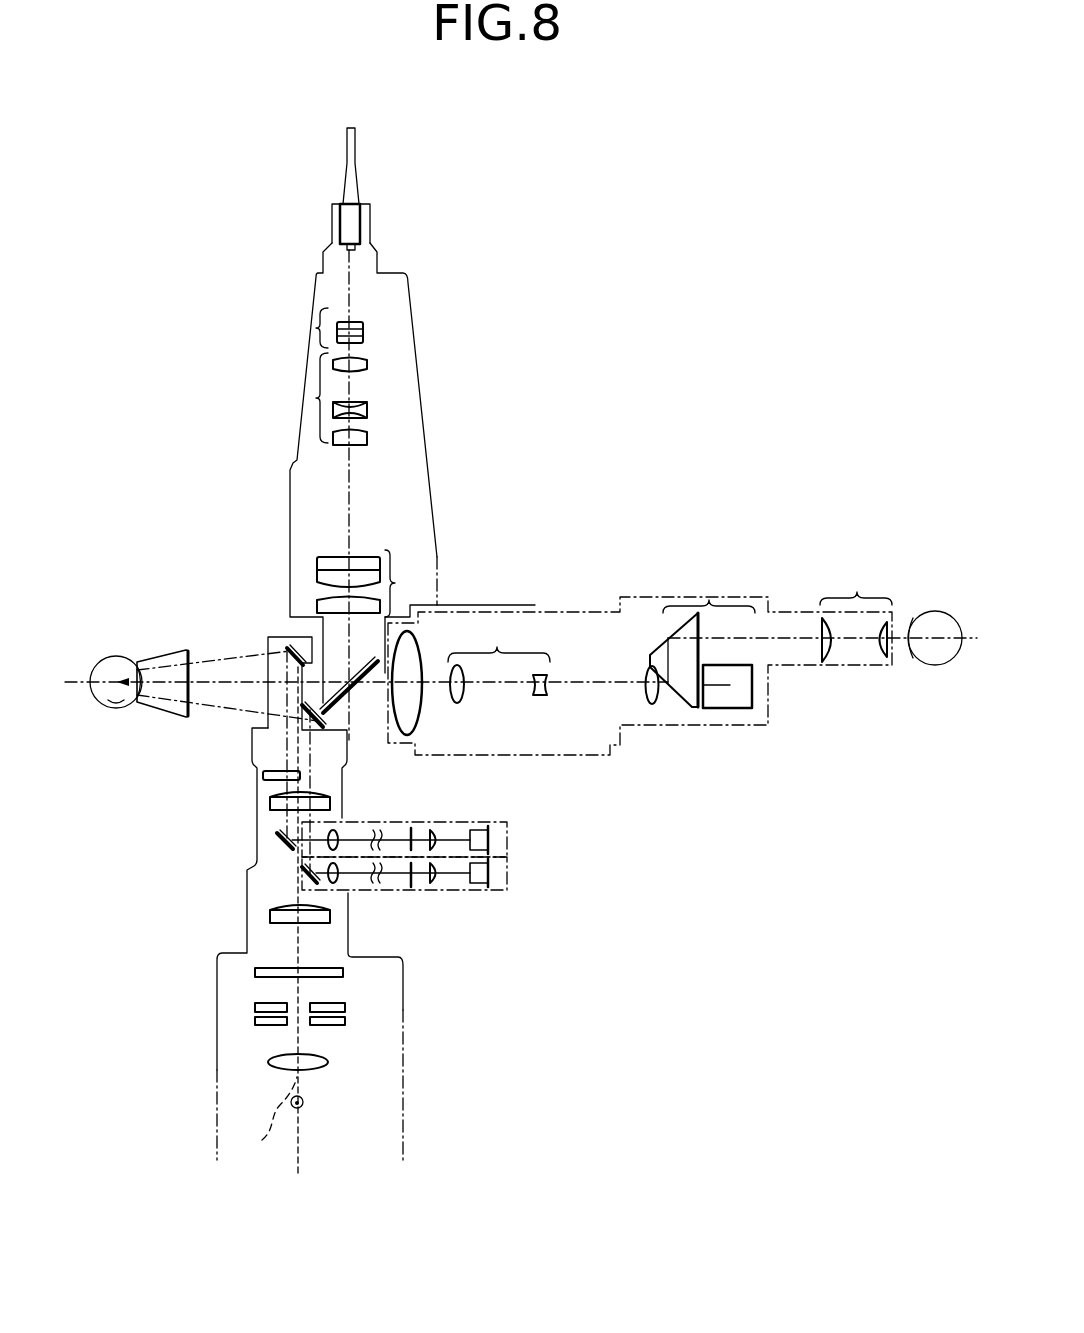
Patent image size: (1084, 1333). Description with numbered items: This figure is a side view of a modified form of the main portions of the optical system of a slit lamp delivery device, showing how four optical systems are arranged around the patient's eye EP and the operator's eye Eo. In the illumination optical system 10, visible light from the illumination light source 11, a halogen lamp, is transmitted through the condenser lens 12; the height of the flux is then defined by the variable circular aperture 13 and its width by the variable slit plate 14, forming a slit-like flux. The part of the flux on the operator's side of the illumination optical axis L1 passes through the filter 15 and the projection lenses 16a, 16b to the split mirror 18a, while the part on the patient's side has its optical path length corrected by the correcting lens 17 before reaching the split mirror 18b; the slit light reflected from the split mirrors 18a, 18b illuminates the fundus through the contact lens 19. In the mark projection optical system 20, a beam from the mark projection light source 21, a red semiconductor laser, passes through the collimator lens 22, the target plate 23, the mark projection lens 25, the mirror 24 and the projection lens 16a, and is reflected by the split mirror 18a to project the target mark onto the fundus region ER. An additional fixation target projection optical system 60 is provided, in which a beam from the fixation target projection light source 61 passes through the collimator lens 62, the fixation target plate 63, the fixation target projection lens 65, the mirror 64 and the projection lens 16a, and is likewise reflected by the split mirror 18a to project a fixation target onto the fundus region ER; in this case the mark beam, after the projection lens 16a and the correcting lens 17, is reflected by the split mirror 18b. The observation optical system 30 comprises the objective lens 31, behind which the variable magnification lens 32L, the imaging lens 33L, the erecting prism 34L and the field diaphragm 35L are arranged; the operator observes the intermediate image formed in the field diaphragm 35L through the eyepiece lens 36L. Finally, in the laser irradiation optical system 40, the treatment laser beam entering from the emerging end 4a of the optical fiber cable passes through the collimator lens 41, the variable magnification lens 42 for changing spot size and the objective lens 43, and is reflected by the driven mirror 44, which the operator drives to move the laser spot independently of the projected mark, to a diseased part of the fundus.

The emerging end of the optical fiber cable 4a is at (345, 223).
The laser irradiation optical system 40 is at (438, 320).
The collimator lens 41 is at (317, 328).
The variable magnification lens 42 is at (317, 398).
The objective lens 43 is at (395, 583).
The driven mirror 44 is at (376, 660).
The observation optical system 30 is at (632, 585).
The objective lens 31 is at (422, 647).
The variable magnification lens 32L is at (497, 647).
The imaging lens 33L is at (652, 706).
The erecting prism 34L is at (709, 600).
The field diaphragm 35L is at (802, 665).
The eyepiece lens 36L is at (857, 592).
The contact lens 19 is at (167, 658).
The split mirror 18a is at (318, 720).
The split mirror 18b is at (286, 649).
The correcting lens 17 is at (265, 776).
The projection lens 16a is at (270, 801).
The projection lens 16b is at (270, 913).
The mirror 24 is at (277, 842).
The mirror 64 is at (302, 876).
The mark projection lens 25 is at (338, 836).
The fixation target projection lens 65 is at (343, 877).
The target plate 23 is at (417, 833).
The fixation target plate 63 is at (415, 879).
The collimator lens 22 is at (440, 834).
The collimator lens 62 is at (443, 878).
The light source for mark projection 21 is at (478, 832).
The fixation target projection light source 61 is at (478, 881).
The mark projection optical system 20 is at (530, 838).
The fixation target projection optical system 60 is at (530, 874).
The illumination optical system 10 is at (505, 1012).
The filter 15 is at (255, 972).
The variable slit plate 14 is at (255, 1007).
The variable circular aperture 13 is at (345, 1020).
The condenser lens 12 is at (328, 1063).
The illumination light source 11 is at (300, 1108).
The illumination optical axis L1 is at (262, 1117).
The fundus region of the patient's eye ER is at (100, 668).
The patient's eye EP is at (113, 703).
The operator's eye Eo is at (936, 666).